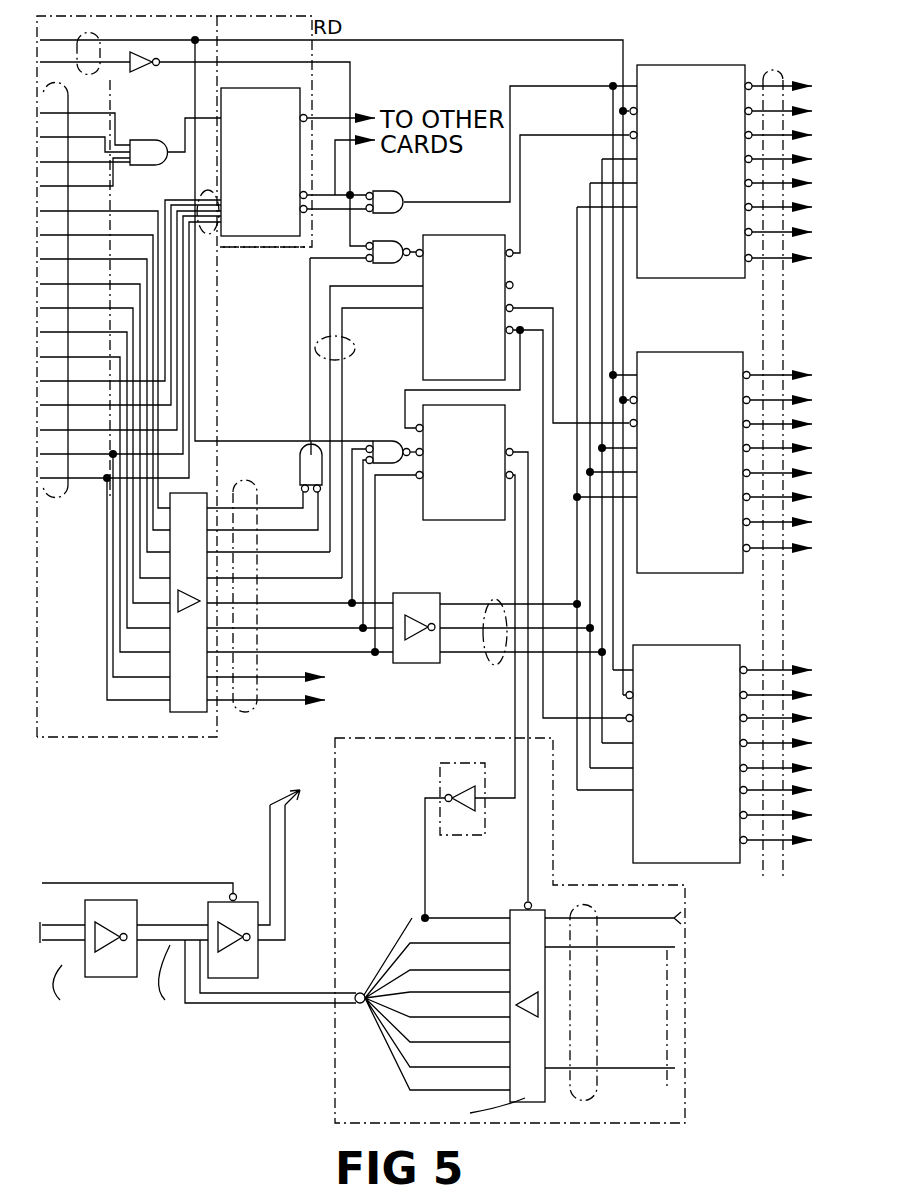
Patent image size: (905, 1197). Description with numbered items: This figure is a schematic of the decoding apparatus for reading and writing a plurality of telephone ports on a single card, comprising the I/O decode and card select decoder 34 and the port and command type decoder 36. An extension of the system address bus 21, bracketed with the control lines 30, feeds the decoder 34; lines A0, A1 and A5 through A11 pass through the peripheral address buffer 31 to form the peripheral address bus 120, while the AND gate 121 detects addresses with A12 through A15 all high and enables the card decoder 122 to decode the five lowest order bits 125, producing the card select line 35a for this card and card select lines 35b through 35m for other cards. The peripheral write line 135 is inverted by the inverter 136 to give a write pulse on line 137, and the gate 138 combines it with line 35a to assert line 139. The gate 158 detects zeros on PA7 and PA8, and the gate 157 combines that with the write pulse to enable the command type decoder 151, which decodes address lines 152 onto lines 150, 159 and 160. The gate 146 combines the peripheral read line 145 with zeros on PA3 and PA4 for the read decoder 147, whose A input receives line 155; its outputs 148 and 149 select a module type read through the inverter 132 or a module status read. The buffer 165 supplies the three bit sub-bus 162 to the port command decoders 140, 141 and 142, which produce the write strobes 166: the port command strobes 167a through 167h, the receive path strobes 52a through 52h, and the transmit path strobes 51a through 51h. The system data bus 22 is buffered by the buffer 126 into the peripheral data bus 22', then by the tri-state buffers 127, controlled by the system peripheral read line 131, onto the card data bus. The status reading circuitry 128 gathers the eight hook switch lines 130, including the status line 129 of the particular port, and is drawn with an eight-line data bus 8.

The control lines 30 is at (86, 36).
The peripheral write line 135 is at (126, 70).
The inverter 136 is at (157, 68).
The AND gate 121 is at (153, 168).
The card decoder 122 is at (221, 92).
The five lowest order address bits 125 is at (200, 190).
The data bus 21 is at (57, 496).
The I/O decode and card select decoder 34 is at (224, 332).
The peripheral address buffer 31 is at (168, 712).
The peripheral address bus 120 is at (243, 722).
The gate 158 is at (300, 478).
The card select line 35m is at (340, 118).
The card select line 35b is at (337, 168).
The card select line 35a is at (345, 222).
The gate 138 is at (404, 196).
The write pulse line 137 is at (360, 245).
The gate 157 is at (340, 286).
The command type decoder 151 is at (458, 235).
The address lines 152 is at (356, 344).
The read decoder 147 is at (480, 521).
The gate 146 is at (396, 433).
The peripheral read line 145 is at (346, 440).
The command type decoder output line 159 is at (518, 308).
The command type decoder output line 150 is at (543, 380).
The command type decoder output line 160 is at (521, 186).
The line PA2 155 is at (377, 574).
The buffer 165 is at (410, 593).
The three bit sub-bus 162 is at (496, 666).
The Y0 output line 148 is at (515, 545).
The Y1 output line 149 is at (531, 604).
The card write line 139 is at (586, 86).
The port command decoder 140 is at (648, 63).
The write strobes 166 is at (760, 70).
The port command write strobe line 167a is at (789, 80).
The port command write strobe line 167h is at (752, 262).
The port command decoder 141 is at (640, 350).
The receive path command strobe line 52a is at (787, 375).
The receive path command strobe line 52h is at (787, 552).
The port command decoder 142 is at (636, 644).
The transmit path strobe line 51a is at (787, 670).
The transmit path strobe line 51h is at (787, 846).
The status reading circuitry 128 is at (688, 1124).
The inverter 132 is at (440, 767).
The data bus 8 is at (356, 994).
The hook switch status line 129 is at (547, 912).
The system peripheral read line 131 is at (132, 883).
The hook switch lines 130 is at (598, 1090).
The system data bus 22 is at (63, 901).
The buffer 126 is at (128, 914).
The peripheral data bus 22' is at (177, 915).
The tri-state buffers 127 is at (247, 897).
The port and command type decoder 36 is at (242, 1086).